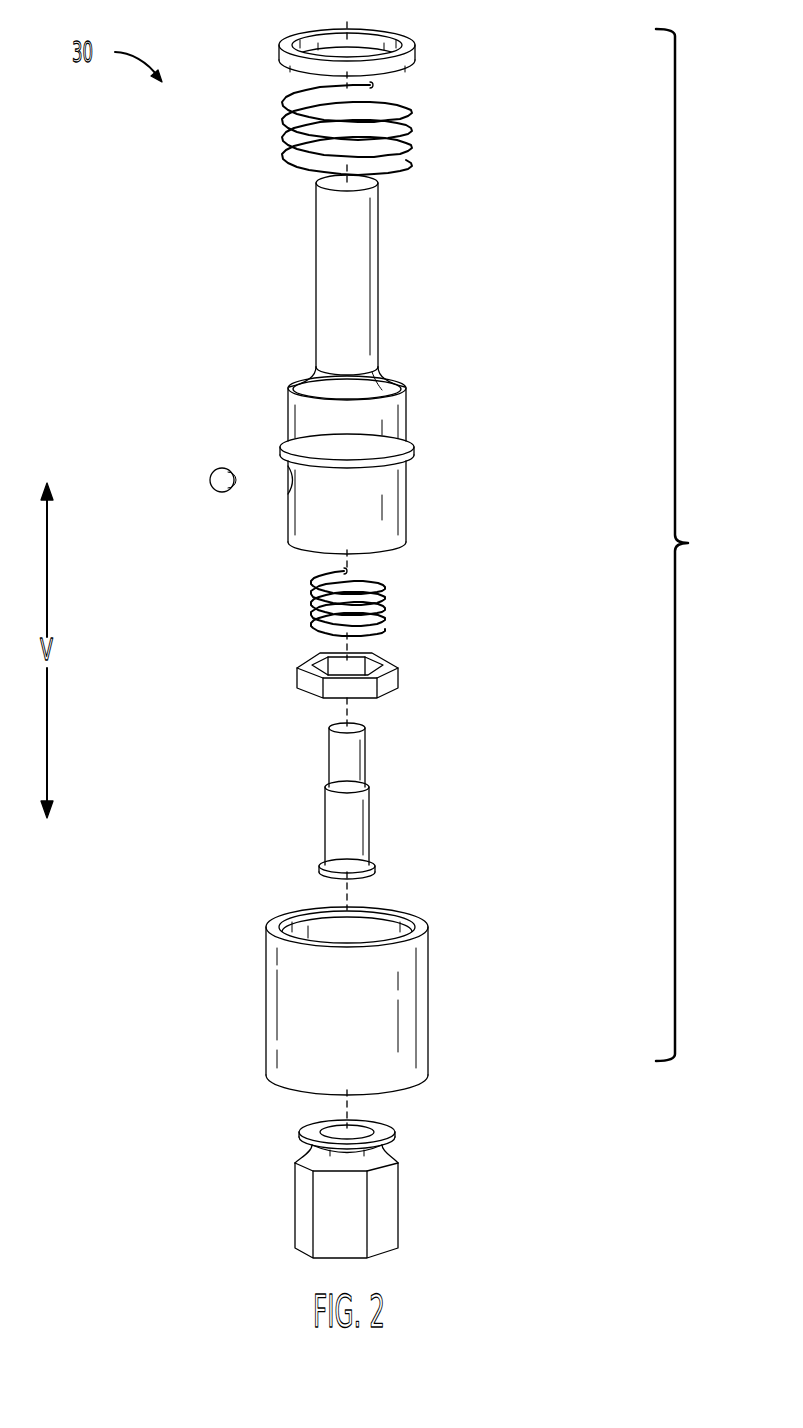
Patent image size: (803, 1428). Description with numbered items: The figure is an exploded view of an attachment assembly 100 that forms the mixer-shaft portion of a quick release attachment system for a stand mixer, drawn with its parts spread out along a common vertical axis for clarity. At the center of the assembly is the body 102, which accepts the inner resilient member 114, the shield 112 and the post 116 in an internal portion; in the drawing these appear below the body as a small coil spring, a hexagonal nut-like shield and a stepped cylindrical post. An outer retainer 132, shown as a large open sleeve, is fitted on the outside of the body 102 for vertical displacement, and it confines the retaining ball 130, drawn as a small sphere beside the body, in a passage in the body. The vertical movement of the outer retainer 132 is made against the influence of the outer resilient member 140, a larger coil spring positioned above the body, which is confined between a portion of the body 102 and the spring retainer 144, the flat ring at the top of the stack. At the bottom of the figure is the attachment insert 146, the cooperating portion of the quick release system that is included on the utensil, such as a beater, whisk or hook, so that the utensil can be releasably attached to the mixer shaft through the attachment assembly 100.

The attachment assembly 100 is at (693, 545).
The body 102 is at (400, 412).
The shield 112 is at (393, 678).
The inner resilient member 114 is at (390, 608).
The post 116 is at (367, 845).
The retaining ball 130 is at (208, 480).
The outer retainer 132 is at (423, 1038).
The outer resilient member 140 is at (408, 134).
The spring retainer 144 is at (415, 61).
The attachment insert 146 is at (390, 1208).